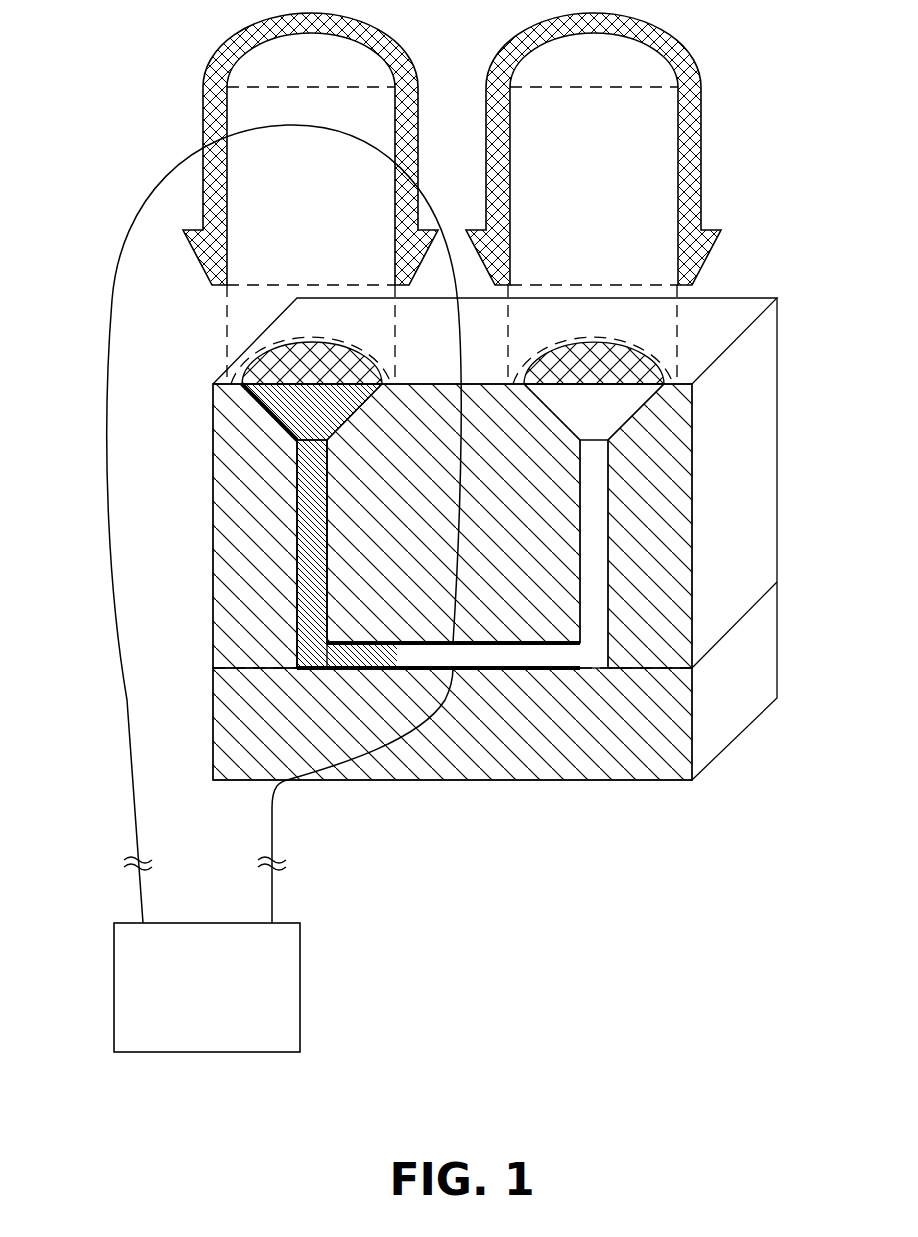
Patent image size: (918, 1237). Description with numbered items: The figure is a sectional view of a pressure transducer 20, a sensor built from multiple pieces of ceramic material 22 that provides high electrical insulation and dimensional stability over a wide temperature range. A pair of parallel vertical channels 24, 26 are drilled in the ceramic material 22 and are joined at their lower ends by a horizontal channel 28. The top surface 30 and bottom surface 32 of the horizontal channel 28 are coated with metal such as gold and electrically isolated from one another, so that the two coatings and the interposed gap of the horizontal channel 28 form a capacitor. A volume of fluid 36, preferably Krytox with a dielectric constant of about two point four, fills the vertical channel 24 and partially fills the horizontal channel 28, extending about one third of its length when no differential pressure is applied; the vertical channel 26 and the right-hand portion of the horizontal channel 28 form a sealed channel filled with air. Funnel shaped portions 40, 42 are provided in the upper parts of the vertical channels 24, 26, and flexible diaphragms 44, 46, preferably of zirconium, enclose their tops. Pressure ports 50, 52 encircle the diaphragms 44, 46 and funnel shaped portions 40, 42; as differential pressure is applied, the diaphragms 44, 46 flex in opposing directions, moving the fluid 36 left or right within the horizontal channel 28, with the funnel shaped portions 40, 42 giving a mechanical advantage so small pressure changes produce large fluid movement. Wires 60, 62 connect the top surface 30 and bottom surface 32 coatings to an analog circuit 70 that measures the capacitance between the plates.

The pressure transducer 20 is at (173, 653).
The ceramic material 22 is at (378, 548).
The vertical channel 24 is at (297, 497).
The vertical channel 26 is at (610, 572).
The horizontal channel 28 is at (425, 657).
The top surface 30 is at (527, 645).
The bottom surface 32 is at (475, 666).
The fluid 36 is at (320, 560).
The funnel shaped portion 40 is at (300, 413).
The funnel shaped portion 42 is at (620, 405).
The flexible diaphragm 44 is at (297, 353).
The flexible diaphragm 46 is at (620, 355).
The pressure port 50 is at (247, 110).
The pressure port 52 is at (650, 113).
The wire 60 is at (273, 808).
The wire 62 is at (132, 760).
The analog circuit 70 is at (300, 950).